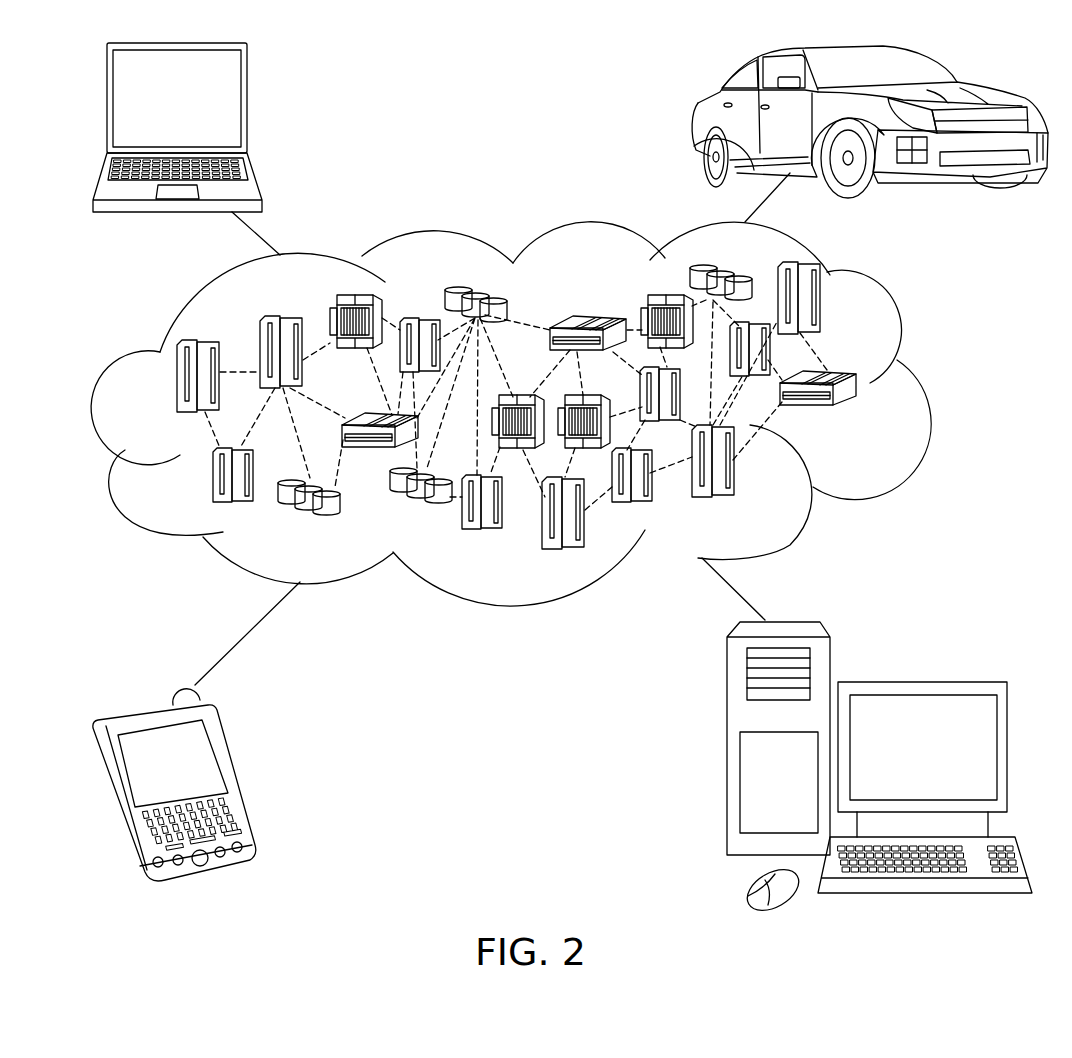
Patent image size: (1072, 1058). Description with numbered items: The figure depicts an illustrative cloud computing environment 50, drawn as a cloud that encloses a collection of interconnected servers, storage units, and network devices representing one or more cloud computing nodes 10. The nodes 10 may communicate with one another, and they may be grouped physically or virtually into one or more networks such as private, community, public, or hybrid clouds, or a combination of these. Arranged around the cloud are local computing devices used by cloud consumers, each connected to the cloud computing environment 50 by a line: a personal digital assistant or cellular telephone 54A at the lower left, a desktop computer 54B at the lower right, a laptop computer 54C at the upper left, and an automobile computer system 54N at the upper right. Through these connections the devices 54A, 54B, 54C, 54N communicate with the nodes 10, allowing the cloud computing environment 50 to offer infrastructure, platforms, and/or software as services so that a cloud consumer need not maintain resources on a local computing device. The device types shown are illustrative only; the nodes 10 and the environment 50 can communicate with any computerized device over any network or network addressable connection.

The cloud computing node 10 is at (863, 417).
The cloud computing environment 50 is at (920, 382).
The personal digital assistant or cellular telephone 54A is at (237, 773).
The desktop computer 54B is at (918, 682).
The laptop computer 54C is at (248, 107).
The automobile computer system 54N is at (698, 123).